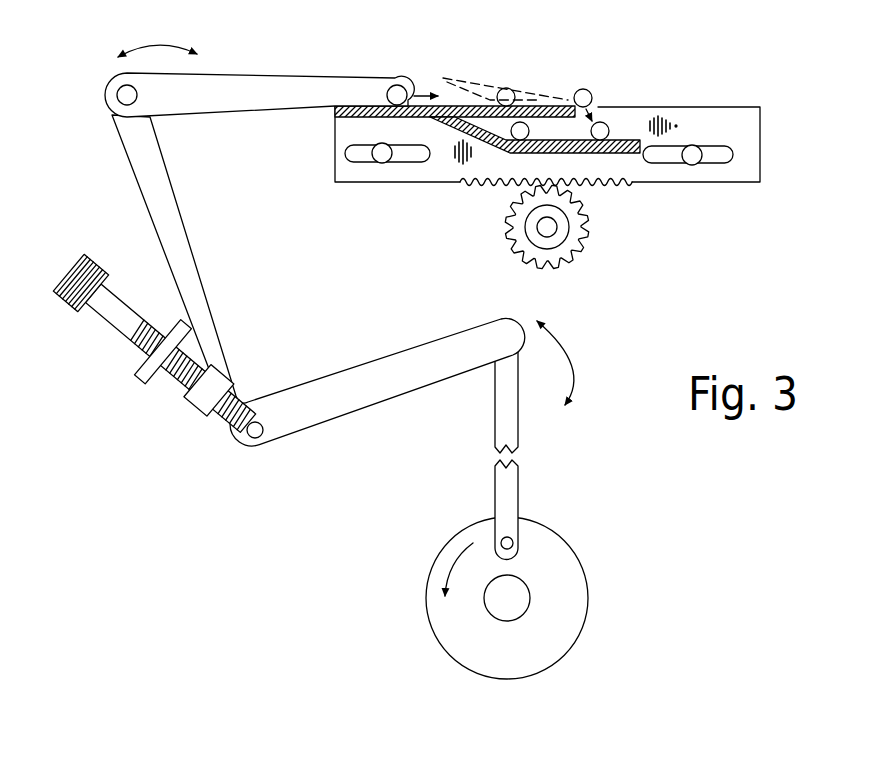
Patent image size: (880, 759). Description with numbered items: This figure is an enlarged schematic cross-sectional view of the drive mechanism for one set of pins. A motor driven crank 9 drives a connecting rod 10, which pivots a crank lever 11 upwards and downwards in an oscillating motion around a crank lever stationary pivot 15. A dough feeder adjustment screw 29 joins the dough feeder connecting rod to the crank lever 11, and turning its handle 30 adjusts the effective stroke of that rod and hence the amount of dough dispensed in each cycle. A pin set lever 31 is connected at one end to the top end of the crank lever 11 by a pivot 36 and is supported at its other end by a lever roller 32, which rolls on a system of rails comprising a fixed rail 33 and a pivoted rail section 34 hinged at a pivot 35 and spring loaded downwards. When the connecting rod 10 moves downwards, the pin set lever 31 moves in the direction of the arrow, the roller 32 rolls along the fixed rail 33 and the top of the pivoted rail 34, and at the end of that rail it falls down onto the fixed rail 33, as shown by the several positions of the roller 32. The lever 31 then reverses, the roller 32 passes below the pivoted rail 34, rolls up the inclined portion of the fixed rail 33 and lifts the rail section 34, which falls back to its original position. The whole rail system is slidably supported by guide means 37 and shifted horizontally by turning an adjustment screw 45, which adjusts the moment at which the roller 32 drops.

The motor driven crank 9 is at (568, 569).
The connecting rod 10 is at (512, 440).
The crank lever 11 is at (345, 370).
The crank lever stationary pivot 15 is at (258, 447).
The dough feeder adjustment screw 29 is at (133, 338).
The handle 30 is at (75, 304).
The pin set lever 31 is at (224, 86).
The lever roller 32 is at (397, 86).
The fixed rail 33 is at (441, 98).
The pivoted rail section 34 is at (534, 100).
The pivot 35 is at (577, 100).
The pivot 36 is at (121, 89).
The guide means 37 is at (380, 164).
The adjustment screw 45 is at (533, 238).